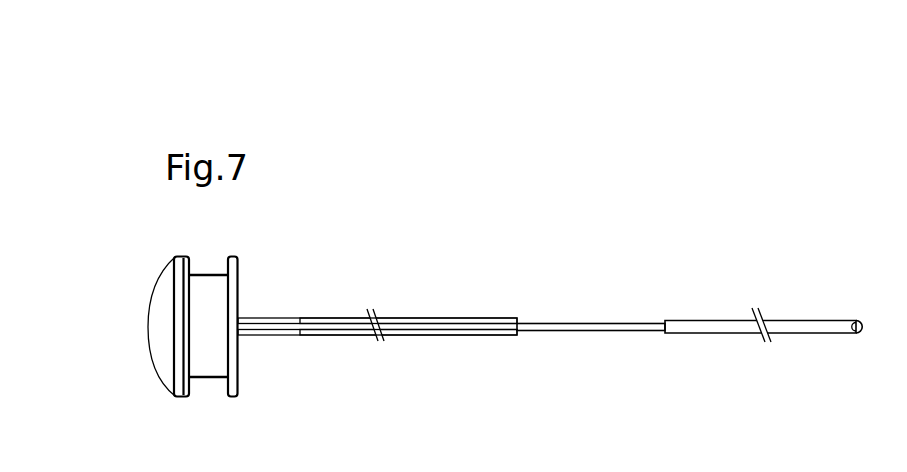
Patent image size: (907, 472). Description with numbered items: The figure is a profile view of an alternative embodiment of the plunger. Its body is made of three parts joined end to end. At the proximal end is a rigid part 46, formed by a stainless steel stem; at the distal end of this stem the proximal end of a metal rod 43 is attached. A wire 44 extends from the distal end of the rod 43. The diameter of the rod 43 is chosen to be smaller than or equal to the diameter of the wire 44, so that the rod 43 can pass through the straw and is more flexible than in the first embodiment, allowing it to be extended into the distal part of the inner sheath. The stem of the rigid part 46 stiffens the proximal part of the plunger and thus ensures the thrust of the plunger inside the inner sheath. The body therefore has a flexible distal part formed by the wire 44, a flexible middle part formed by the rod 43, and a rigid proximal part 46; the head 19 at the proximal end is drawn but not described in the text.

The head 19 is at (163, 283).
The rigid part 46 is at (455, 317).
The rod 43 is at (603, 323).
The wire 44 is at (820, 333).